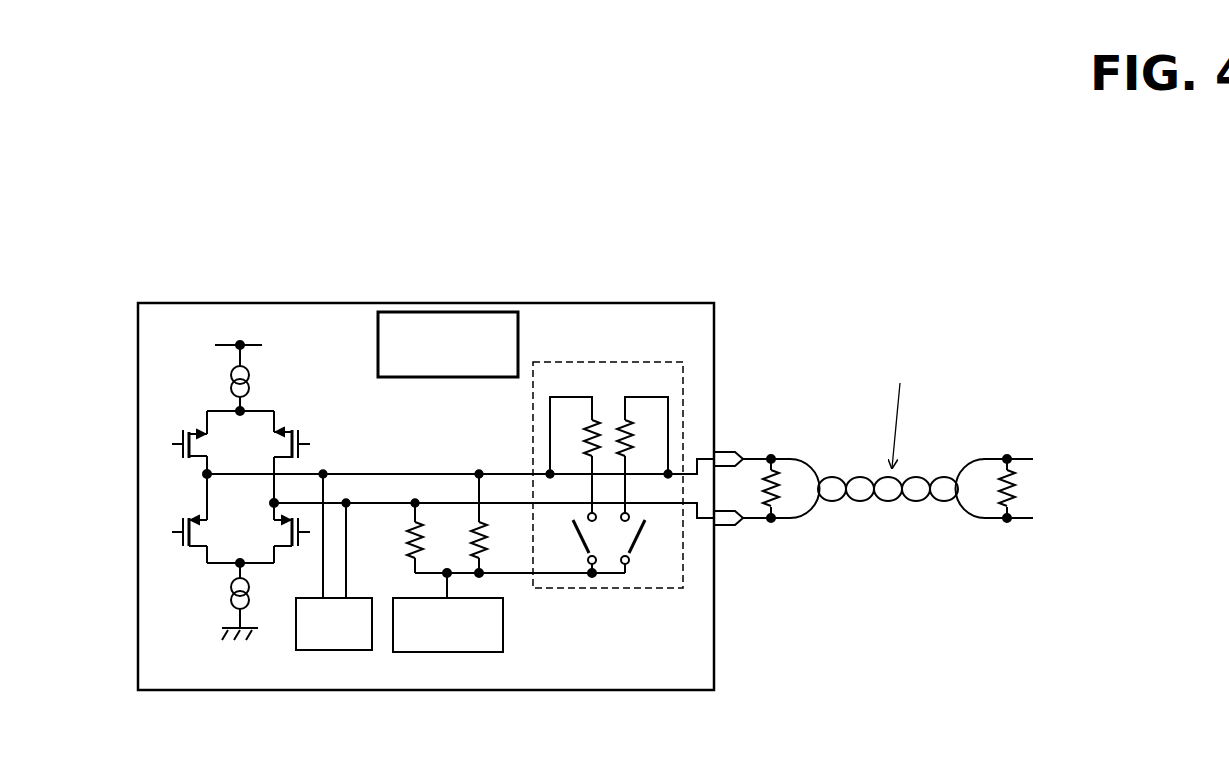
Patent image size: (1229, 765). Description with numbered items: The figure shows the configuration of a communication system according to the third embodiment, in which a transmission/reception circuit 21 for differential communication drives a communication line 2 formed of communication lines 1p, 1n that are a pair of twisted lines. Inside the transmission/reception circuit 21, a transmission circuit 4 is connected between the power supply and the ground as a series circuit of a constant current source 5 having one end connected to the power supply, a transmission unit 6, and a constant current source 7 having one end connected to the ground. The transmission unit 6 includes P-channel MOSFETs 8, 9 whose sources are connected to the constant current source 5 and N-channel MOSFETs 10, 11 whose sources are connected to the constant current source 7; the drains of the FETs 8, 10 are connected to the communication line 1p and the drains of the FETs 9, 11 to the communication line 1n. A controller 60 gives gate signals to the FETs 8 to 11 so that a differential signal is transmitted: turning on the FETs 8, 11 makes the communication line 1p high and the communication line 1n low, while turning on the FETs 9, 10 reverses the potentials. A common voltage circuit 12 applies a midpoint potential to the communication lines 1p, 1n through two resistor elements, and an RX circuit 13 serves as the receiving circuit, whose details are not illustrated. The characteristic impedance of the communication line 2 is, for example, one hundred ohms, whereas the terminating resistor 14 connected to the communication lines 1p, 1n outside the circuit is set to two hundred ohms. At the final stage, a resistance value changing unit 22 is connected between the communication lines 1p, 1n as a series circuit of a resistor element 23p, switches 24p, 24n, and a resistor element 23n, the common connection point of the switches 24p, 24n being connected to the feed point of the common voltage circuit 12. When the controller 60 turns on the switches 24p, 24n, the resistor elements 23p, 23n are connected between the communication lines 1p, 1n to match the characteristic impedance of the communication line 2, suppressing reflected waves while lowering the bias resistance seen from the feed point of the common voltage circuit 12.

The transmission/reception circuit 21 is at (422, 303).
The controller 60 is at (448, 344).
The transmission unit 6 is at (237, 485).
The transmission circuit 4 is at (257, 436).
The constant current source 5 is at (251, 386).
The constant current source 7 is at (251, 594).
The P-channel MOSFET 8 is at (178, 438).
The P-channel MOSFET 9 is at (312, 440).
The N-channel MOSFET 10 is at (178, 542).
The N-channel MOSFET 11 is at (300, 542).
The Vcom circuit 12 is at (448, 652).
The RX circuit 13 is at (338, 650).
The resistance value changing unit 22 is at (600, 362).
The resistor element 23p is at (572, 432).
The resistor element 23n is at (648, 440).
The switch 24p is at (580, 560).
The switch 24n is at (640, 560).
The communication line 2 is at (884, 454).
The communication line 1p is at (792, 458).
The communication line 1n is at (795, 522).
The terminating resistor 14 is at (793, 493).